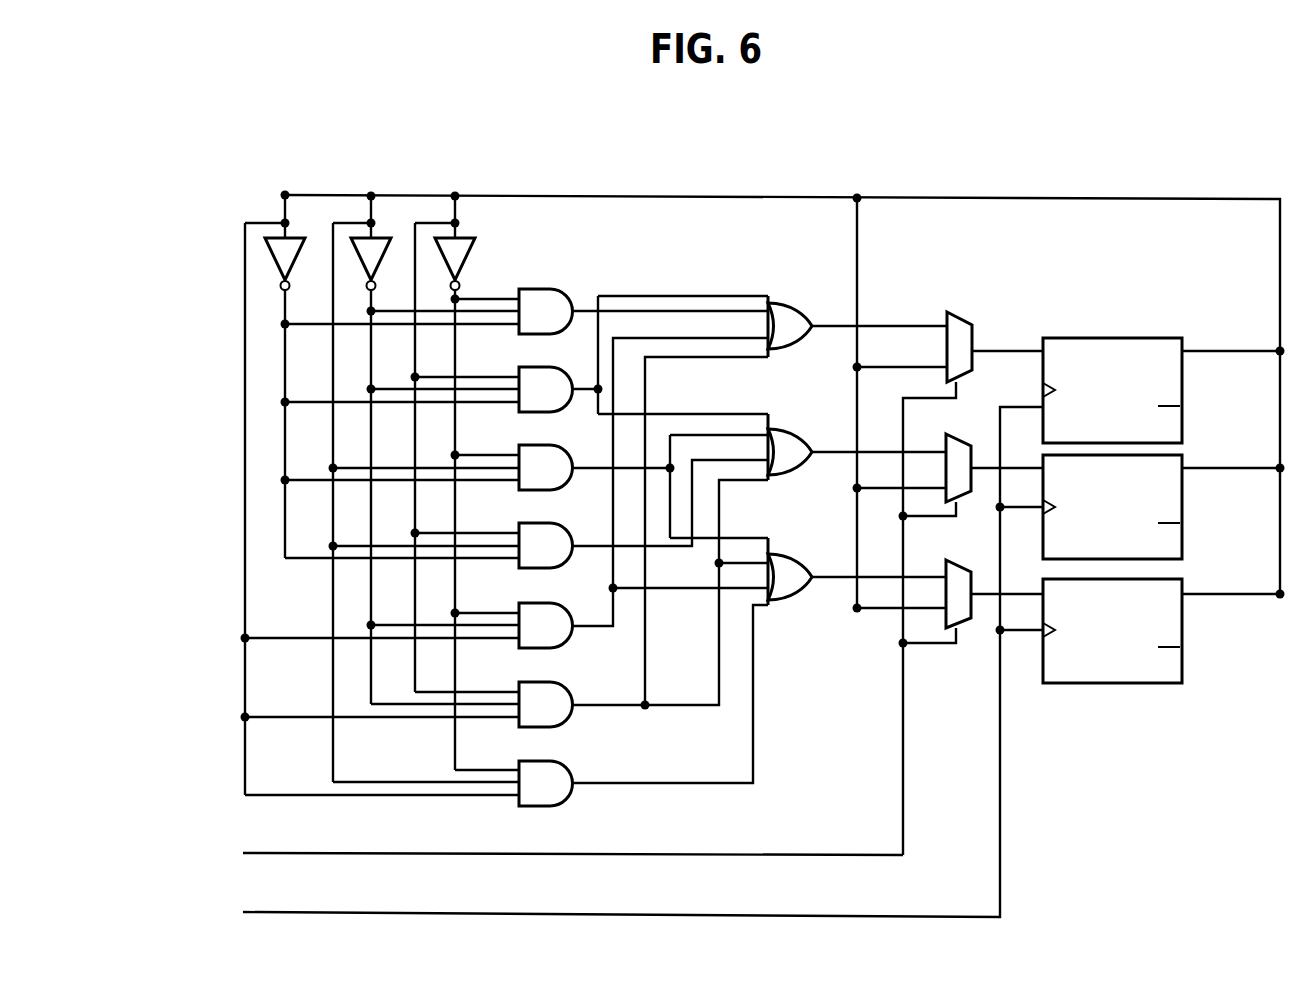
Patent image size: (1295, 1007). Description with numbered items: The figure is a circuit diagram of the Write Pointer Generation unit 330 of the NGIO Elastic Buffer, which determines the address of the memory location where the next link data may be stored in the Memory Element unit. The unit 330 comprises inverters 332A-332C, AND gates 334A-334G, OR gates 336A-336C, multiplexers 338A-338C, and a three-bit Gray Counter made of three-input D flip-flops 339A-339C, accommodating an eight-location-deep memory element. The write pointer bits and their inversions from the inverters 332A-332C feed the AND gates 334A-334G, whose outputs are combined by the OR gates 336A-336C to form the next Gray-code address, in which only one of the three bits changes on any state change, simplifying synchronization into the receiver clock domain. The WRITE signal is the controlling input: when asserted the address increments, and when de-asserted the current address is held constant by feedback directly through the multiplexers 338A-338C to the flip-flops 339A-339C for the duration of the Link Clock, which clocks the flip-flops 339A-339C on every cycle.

The Write Pointer Generation unit 330 is at (1016, 172).
The inverters 332A-332C is at (232, 250).
The AND gates 334A-334G is at (572, 281).
The OR gates 336A-336C is at (788, 612).
The multiplexers 338A-338C is at (960, 313).
The 3-input D flip-flops 339A-339C is at (1090, 693).